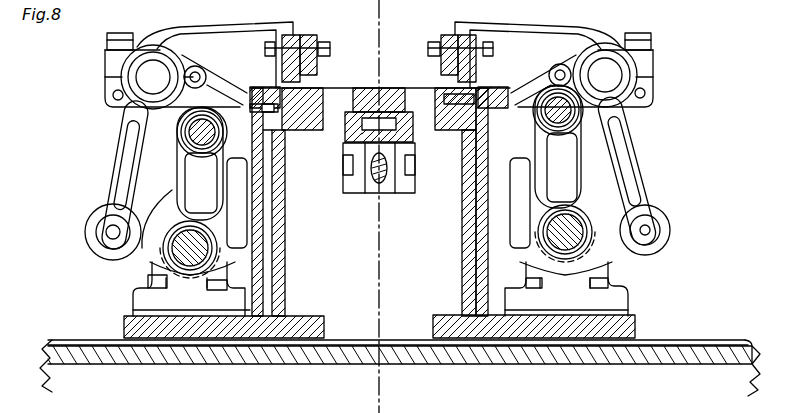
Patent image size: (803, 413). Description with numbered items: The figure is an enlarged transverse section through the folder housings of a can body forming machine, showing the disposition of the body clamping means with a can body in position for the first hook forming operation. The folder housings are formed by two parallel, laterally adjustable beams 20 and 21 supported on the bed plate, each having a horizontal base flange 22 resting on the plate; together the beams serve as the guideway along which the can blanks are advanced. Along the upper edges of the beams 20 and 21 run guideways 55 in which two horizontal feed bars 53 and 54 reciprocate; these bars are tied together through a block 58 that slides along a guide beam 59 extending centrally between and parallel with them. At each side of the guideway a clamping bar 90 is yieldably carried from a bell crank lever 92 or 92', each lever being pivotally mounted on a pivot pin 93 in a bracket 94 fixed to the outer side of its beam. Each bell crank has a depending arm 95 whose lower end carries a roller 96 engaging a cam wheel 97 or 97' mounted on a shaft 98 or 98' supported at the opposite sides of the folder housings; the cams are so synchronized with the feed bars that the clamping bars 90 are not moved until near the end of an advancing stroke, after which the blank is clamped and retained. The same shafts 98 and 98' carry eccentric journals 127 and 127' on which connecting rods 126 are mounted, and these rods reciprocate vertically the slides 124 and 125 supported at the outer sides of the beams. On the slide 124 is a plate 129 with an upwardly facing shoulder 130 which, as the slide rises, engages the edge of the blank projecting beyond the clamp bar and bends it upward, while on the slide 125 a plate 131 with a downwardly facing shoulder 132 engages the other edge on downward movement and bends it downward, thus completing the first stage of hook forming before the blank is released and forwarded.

The beam 20 is at (272, 230).
The beam 21 is at (475, 210).
The horizontal base flange 22 is at (124, 326).
The feed bar 53 is at (320, 88).
The feed bar 54 is at (450, 92).
The guideway 55 is at (320, 112).
The block 58 is at (410, 143).
The guide beam 59 is at (350, 140).
The clamping bar 90 is at (305, 48).
The bell crank lever 92 is at (548, 52).
The bell crank lever 92' is at (215, 52).
The pivot pin 93 is at (150, 82).
The bracket 94 is at (185, 136).
The depending arm 95 is at (110, 203).
The roller 96 is at (85, 238).
The cam wheel 97 is at (590, 237).
The cam wheel 97' is at (158, 237).
The shaft 98 is at (611, 254).
The shaft 98' is at (157, 274).
The slide 124 is at (270, 204).
The slide 125 is at (470, 232).
The connecting rod 126 is at (195, 172).
The eccentric journal 127 is at (628, 232).
The eccentric journal 127' is at (182, 265).
The plate 129 is at (262, 104).
The upwardly facing shoulder 130 is at (258, 48).
The plate 131 is at (512, 72).
The downwardly facing shoulder 132 is at (492, 90).